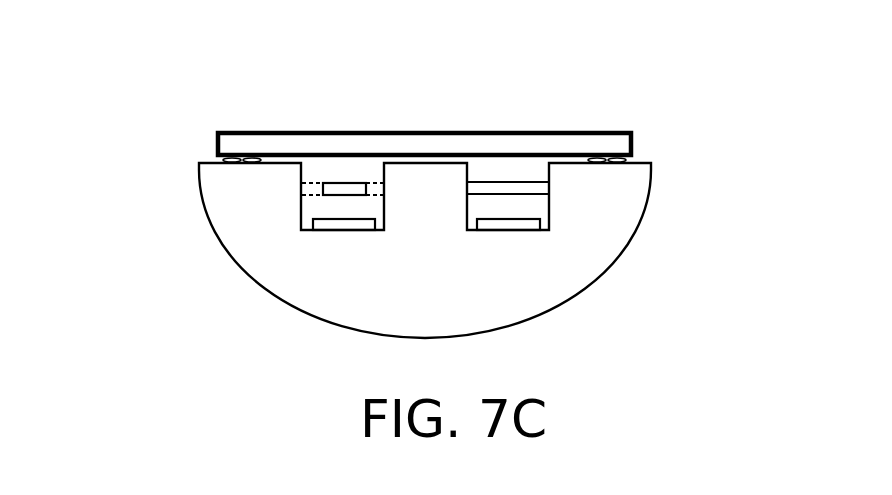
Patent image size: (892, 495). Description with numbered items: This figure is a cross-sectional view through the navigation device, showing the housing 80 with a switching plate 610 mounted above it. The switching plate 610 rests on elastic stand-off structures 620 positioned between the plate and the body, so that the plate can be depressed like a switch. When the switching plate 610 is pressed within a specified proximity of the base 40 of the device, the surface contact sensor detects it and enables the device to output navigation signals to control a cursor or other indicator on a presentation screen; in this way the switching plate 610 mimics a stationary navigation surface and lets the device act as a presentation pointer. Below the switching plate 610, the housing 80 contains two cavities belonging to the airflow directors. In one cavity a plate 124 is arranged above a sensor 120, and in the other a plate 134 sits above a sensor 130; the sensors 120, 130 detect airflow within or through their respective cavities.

The base 40 is at (210, 161).
The housing 80 is at (218, 257).
The switching plate 610 is at (585, 130).
The elastic stand-off structures 620 is at (217, 158).
The plate 124 is at (349, 191).
The sensor 120 is at (347, 224).
The plate 134 is at (490, 191).
The sensor 130 is at (492, 224).